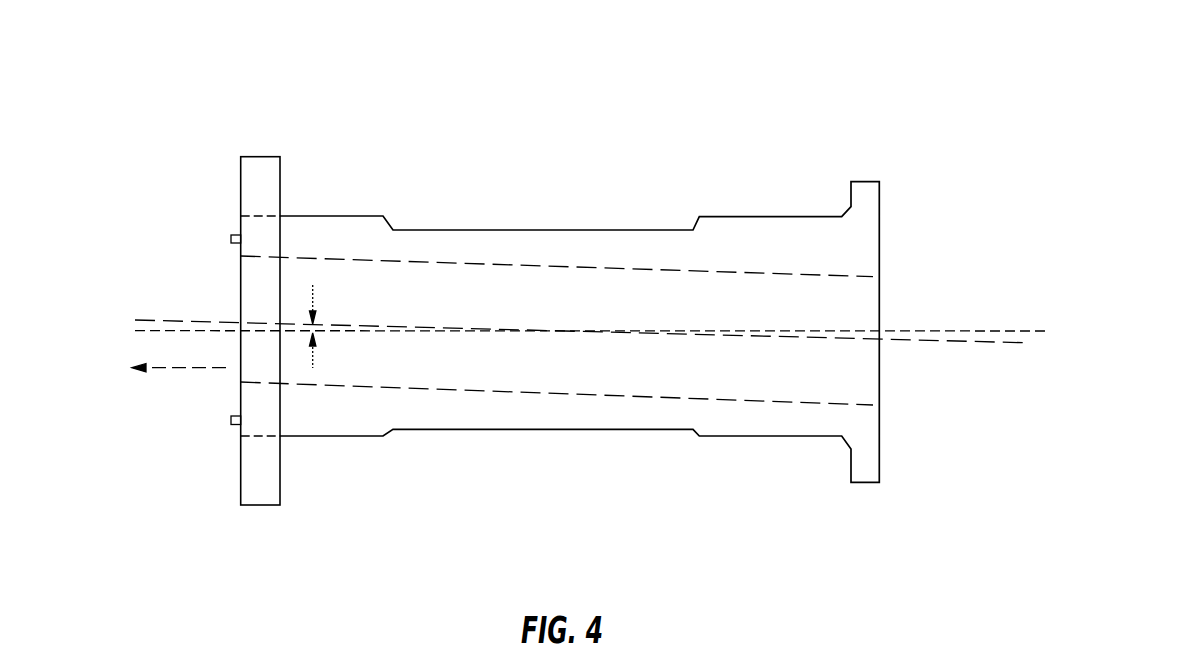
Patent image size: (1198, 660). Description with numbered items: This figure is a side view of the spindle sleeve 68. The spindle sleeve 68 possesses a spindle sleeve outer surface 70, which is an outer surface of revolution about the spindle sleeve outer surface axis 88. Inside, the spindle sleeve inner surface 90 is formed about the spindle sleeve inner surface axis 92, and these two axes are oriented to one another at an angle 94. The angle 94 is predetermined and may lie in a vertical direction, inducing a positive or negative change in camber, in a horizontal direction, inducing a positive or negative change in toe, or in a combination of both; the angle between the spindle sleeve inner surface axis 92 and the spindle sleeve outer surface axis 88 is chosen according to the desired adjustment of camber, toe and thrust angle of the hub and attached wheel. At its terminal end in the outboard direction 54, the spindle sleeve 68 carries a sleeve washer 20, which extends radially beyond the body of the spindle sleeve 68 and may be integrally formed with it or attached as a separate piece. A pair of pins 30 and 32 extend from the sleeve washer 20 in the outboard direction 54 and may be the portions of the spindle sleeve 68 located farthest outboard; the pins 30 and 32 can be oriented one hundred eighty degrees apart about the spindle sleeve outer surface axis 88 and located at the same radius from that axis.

The sleeve washer 20 is at (280, 482).
The pin 30 is at (230, 240).
The pin 32 is at (230, 422).
The outboard direction 54 is at (203, 368).
The spindle sleeve 68 is at (710, 136).
The spindle sleeve outer surface 70 is at (533, 225).
The spindle sleeve outer surface axis 88 is at (897, 331).
The spindle sleeve inner surface 90 is at (523, 265).
The spindle sleeve inner surface axis 92 is at (208, 320).
The angle 94 is at (313, 300).